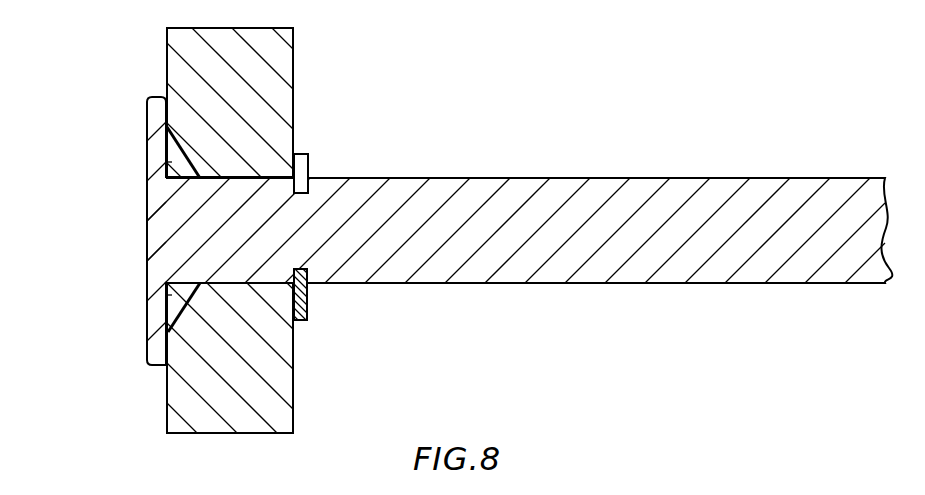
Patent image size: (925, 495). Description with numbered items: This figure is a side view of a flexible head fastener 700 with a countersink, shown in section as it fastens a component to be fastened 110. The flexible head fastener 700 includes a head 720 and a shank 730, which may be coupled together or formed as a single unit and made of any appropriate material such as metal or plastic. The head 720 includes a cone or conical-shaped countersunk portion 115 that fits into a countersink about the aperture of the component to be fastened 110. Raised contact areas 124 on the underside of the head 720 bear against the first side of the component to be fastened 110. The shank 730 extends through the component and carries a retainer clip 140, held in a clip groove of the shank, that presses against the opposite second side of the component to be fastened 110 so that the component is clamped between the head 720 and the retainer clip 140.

The flexible head fastener 700 is at (451, 255).
The shank 730 is at (534, 255).
The head 720 is at (155, 318).
The component to be fastened 110 is at (218, 418).
The contact area 124 is at (166, 110).
The countersunk portion 115 is at (172, 162).
The retainer clip 140 is at (303, 301).